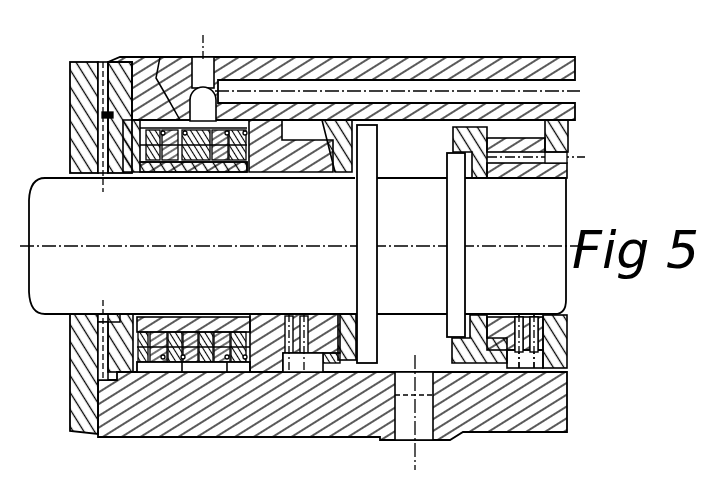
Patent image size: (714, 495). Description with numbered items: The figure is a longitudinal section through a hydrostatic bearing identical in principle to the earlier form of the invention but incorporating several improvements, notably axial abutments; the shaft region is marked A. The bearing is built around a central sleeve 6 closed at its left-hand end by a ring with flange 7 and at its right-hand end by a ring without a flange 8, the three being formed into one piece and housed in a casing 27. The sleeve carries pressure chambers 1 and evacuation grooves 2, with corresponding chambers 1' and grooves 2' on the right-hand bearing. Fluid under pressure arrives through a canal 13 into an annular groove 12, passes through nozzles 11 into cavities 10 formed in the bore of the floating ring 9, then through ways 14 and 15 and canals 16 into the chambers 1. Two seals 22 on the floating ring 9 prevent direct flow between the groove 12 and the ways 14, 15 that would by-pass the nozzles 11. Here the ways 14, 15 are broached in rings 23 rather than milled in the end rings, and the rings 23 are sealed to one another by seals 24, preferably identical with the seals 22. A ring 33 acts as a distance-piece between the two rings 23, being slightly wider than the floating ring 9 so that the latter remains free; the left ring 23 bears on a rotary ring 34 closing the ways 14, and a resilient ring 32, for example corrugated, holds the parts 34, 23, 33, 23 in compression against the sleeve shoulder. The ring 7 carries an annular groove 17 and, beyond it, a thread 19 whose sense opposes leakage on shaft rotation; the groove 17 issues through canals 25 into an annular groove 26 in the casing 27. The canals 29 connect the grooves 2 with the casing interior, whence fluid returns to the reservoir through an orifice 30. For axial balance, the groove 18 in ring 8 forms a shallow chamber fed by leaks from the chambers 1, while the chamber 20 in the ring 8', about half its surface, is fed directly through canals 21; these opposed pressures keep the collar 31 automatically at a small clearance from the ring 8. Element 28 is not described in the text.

The shaft A is at (297, 230).
The pressure chamber 1 is at (291, 168).
The pressure chamber 1' is at (527, 189).
The evacuation groove 2 is at (295, 324).
The evacuation groove 2' is at (515, 314).
The central sleeve 6 is at (553, 166).
The ring with flange 7 is at (119, 320).
The ring without a flange 8 is at (347, 318).
The ring 8' is at (470, 171).
The floating ring 9 is at (206, 335).
The cavity 10 is at (176, 162).
The nozzle 11 is at (195, 163).
The annular groove 12 is at (207, 362).
The canal 13 is at (164, 62).
The way 14 is at (157, 163).
The way 15 is at (246, 171).
The canal 16 is at (164, 163).
The annular evacuation groove 17 is at (103, 312).
The annular evacuation groove 18 is at (345, 165).
The thread 19 is at (82, 313).
The chamber 20 is at (468, 312).
The canal 21 is at (510, 170).
The seal 22 is at (182, 362).
The ring 23 is at (172, 320).
The seal 24 is at (160, 364).
The canal 25 is at (93, 165).
The annular groove 26 is at (112, 90).
The casing 27 is at (345, 75).
The lower housing wall 28 is at (97, 432).
The evacuation canal 29 is at (283, 330).
The orifice 30 is at (403, 444).
The collar 31 is at (368, 338).
The resilient ring 32 is at (132, 345).
The ring 33 is at (218, 334).
The rotary ring 34 is at (151, 333).